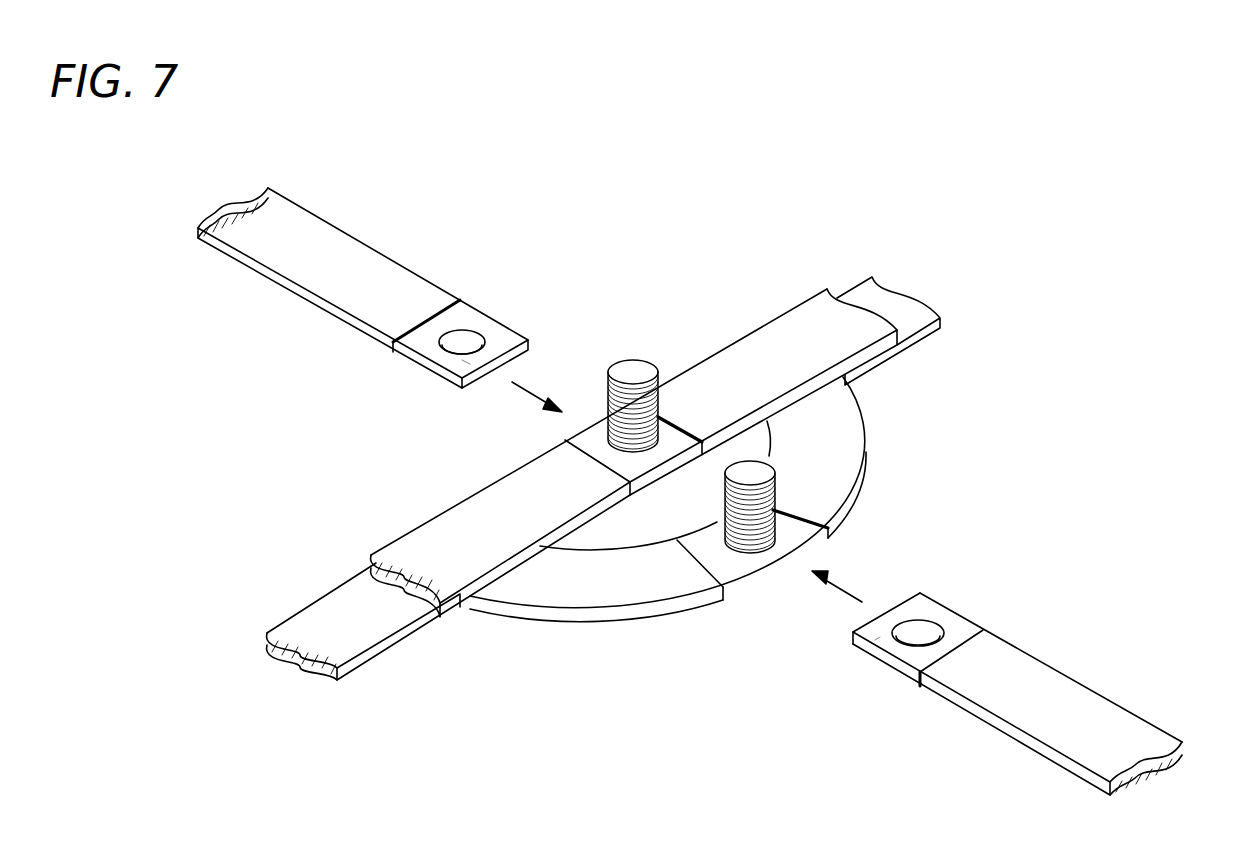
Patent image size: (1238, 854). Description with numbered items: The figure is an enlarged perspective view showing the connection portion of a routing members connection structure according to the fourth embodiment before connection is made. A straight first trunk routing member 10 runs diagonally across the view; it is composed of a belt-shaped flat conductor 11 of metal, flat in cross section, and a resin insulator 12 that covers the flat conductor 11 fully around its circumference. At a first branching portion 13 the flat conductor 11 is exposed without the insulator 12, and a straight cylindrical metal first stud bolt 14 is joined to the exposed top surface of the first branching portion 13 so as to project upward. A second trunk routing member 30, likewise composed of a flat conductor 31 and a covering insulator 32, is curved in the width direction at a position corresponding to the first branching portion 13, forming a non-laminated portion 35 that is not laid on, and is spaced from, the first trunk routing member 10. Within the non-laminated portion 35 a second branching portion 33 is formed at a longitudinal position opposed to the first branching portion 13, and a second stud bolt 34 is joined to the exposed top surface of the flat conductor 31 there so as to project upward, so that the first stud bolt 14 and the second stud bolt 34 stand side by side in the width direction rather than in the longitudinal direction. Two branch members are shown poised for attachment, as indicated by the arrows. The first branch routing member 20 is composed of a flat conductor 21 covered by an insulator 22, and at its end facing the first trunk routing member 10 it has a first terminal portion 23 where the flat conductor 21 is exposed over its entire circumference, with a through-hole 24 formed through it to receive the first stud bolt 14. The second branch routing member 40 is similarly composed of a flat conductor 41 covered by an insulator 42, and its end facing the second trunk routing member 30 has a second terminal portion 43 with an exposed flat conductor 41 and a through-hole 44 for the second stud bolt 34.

The first trunk routing member 10 is at (603, 455).
The flat conductor 11 is at (590, 443).
The insulator 12 is at (737, 367).
The first branching portion 13 is at (602, 435).
The first stud bolt 14 is at (633, 372).
The first branch routing member 20 is at (380, 308).
The flat conductor 21 is at (443, 353).
The insulator 22 is at (332, 222).
The first terminal portion 23 is at (458, 367).
The through-hole 24 is at (438, 352).
The second trunk routing member 30 is at (712, 529).
The flat conductor 31 is at (797, 540).
The insulator 32 is at (688, 610).
The second branching portion 33 is at (713, 537).
The second stud bolt 34 is at (752, 470).
The non-laminated portion 35 is at (850, 473).
The second branch routing member 40 is at (984, 669).
The flat conductor 41 is at (885, 631).
The insulator 42 is at (1128, 713).
The second terminal portion 43 is at (880, 637).
The through-hole 44 is at (905, 647).